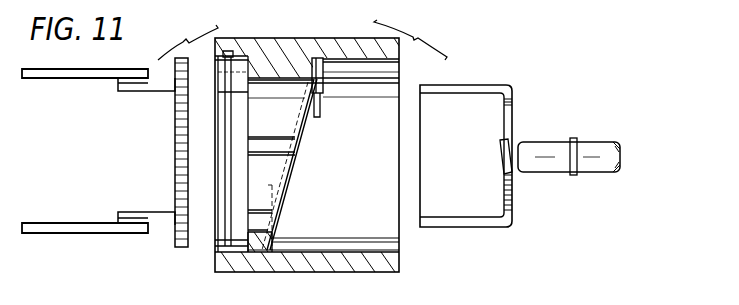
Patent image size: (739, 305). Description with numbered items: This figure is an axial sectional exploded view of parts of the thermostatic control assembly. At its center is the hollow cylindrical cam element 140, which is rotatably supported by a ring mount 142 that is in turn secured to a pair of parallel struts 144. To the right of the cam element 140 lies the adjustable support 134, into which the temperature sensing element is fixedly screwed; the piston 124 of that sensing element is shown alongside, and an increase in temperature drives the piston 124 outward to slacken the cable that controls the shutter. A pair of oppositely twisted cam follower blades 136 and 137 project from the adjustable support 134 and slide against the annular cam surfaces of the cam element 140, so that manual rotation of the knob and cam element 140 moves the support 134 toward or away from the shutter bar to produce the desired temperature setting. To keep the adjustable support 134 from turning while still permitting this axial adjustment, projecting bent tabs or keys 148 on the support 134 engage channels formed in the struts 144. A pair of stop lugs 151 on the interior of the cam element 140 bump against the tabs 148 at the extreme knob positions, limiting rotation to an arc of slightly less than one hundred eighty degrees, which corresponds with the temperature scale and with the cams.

The piston 124 is at (600, 168).
The adjustable support 134 is at (508, 193).
The cam follower blade 136 is at (325, 88).
The cam follower blade 137 is at (285, 190).
The cam element 140 is at (364, 271).
The ring mount 142 is at (181, 248).
The struts 144 is at (48, 78).
The tabs 148 is at (473, 84).
The stop lugs 151 is at (296, 136).